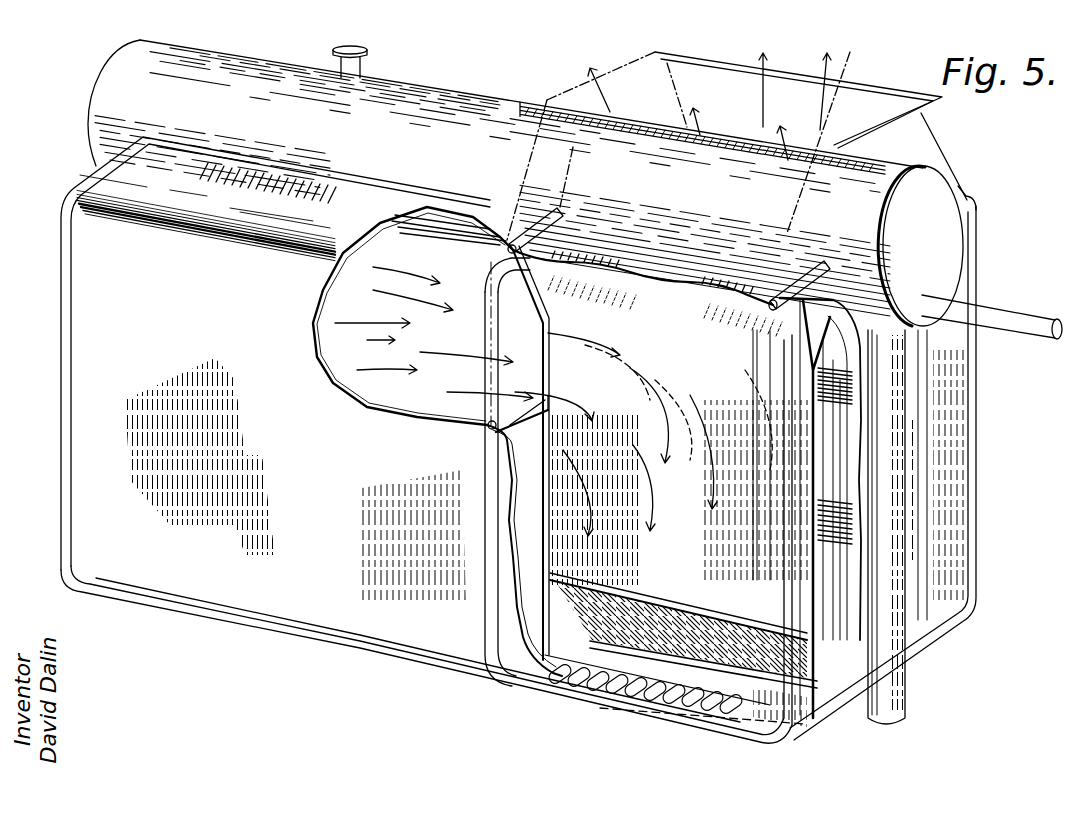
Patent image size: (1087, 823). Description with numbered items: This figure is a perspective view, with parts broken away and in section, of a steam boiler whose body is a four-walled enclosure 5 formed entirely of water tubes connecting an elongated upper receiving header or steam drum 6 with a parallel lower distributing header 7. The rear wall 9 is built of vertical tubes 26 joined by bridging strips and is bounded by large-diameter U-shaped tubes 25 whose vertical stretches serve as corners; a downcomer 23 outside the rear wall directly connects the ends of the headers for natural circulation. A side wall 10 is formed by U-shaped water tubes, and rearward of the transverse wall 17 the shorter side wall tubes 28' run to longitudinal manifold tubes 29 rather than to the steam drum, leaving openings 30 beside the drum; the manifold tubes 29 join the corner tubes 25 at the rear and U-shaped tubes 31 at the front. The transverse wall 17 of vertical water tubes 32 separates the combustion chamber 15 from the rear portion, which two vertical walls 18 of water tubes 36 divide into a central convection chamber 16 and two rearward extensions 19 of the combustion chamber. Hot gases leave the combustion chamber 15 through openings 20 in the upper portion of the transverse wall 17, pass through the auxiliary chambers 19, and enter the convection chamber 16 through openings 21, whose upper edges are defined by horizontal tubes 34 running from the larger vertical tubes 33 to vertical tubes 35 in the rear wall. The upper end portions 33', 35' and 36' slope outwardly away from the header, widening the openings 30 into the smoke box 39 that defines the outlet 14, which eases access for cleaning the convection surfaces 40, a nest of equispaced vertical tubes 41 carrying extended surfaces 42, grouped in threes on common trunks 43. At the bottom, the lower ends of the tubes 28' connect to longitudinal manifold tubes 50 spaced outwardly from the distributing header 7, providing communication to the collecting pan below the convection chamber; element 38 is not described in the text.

The enclosure 5 is at (58, 154).
The upper receiving header 6 is at (448, 135).
The lower distributing header 7 is at (673, 657).
The rear wall 9 is at (953, 412).
The side wall 10 is at (267, 595).
The outlet 14 is at (908, 114).
The combustion chamber 15 is at (434, 334).
The convection chamber 16 is at (845, 284).
The transverse wall 17 is at (490, 423).
The vertical walls 18 is at (713, 467).
The rearward extensions of the combustion chamber 19 is at (588, 341).
The openings 20 is at (507, 327).
The openings 21 is at (600, 575).
The downcomer 23 is at (890, 683).
The U-shaped tubes 25 is at (977, 218).
The vertical tubes 26 is at (953, 518).
The U-shaped side wall-forming tubes 28' is at (637, 340).
The manifold tubes 29 is at (578, 257).
The openings 30 is at (663, 243).
The U-shaped tubes 31 is at (487, 473).
The vertical water tubes 32 is at (588, 452).
The vertically disposed tubes 33 is at (562, 453).
The upper end portions 33' is at (489, 275).
The horizontally disposed tubes 34 is at (673, 595).
The vertical tubes 35 is at (533, 544).
The upper end portions 35' is at (777, 328).
The water tubes 36 is at (673, 489).
The upper portions 36' is at (717, 334).
The connecting pipe 38 is at (525, 413).
The smoke box 39 is at (840, 112).
The convection surfaces 40 is at (848, 461).
The tubes 41 is at (840, 541).
The extended surfaces 42 is at (852, 382).
The common trunk 43 is at (852, 300).
The manifold tubes 50 is at (720, 700).